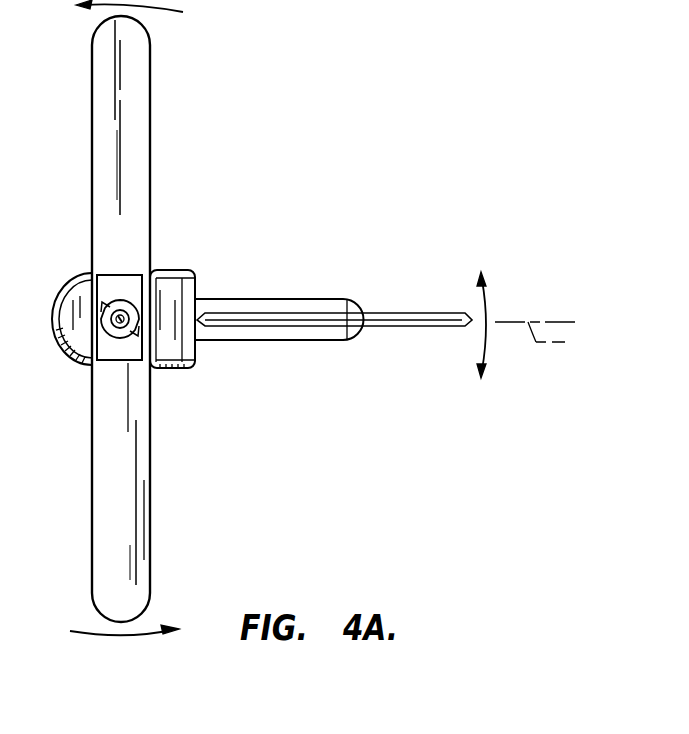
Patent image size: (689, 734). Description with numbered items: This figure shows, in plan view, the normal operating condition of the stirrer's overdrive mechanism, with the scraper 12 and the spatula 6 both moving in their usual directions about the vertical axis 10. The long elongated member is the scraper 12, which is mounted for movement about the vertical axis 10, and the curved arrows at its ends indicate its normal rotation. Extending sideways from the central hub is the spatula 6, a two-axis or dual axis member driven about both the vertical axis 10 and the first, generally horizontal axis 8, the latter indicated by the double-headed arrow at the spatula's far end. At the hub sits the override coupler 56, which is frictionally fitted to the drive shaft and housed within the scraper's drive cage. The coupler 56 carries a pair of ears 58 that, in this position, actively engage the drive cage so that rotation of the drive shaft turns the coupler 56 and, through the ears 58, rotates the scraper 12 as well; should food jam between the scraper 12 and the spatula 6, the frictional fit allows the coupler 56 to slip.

The scraper 12 is at (151, 110).
The vertical axis 10 is at (115, 330).
The override coupler 56 is at (128, 305).
The ears 58 is at (114, 303).
The spatula 6 is at (397, 312).
The horizontal axis 8 is at (531, 325).